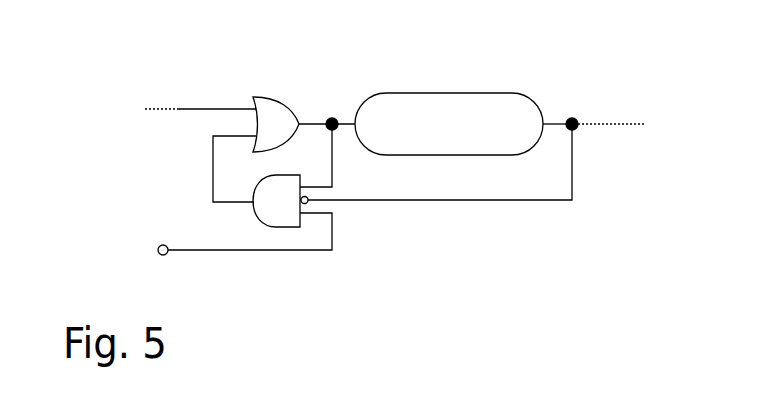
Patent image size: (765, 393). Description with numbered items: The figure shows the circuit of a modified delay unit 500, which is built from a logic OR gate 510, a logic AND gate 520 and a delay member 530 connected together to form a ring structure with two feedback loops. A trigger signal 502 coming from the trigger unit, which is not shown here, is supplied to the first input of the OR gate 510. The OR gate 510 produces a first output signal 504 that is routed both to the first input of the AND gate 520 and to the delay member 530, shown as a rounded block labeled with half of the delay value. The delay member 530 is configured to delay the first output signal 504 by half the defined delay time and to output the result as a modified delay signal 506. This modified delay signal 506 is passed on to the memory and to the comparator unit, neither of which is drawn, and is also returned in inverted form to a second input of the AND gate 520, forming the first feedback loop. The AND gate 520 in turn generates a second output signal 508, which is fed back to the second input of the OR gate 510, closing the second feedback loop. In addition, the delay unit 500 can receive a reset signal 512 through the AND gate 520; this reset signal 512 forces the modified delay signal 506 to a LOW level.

The modified delay unit 500 is at (436, 235).
The trigger signal 502 is at (167, 109).
The first output signal 504 is at (311, 122).
The modified delay signal 506 is at (570, 118).
The second output signal 508 is at (213, 172).
The logic OR gate 510 is at (278, 93).
The reset signal 512 is at (268, 251).
The logic AND gate 520 is at (252, 213).
The delay member 530 is at (446, 92).